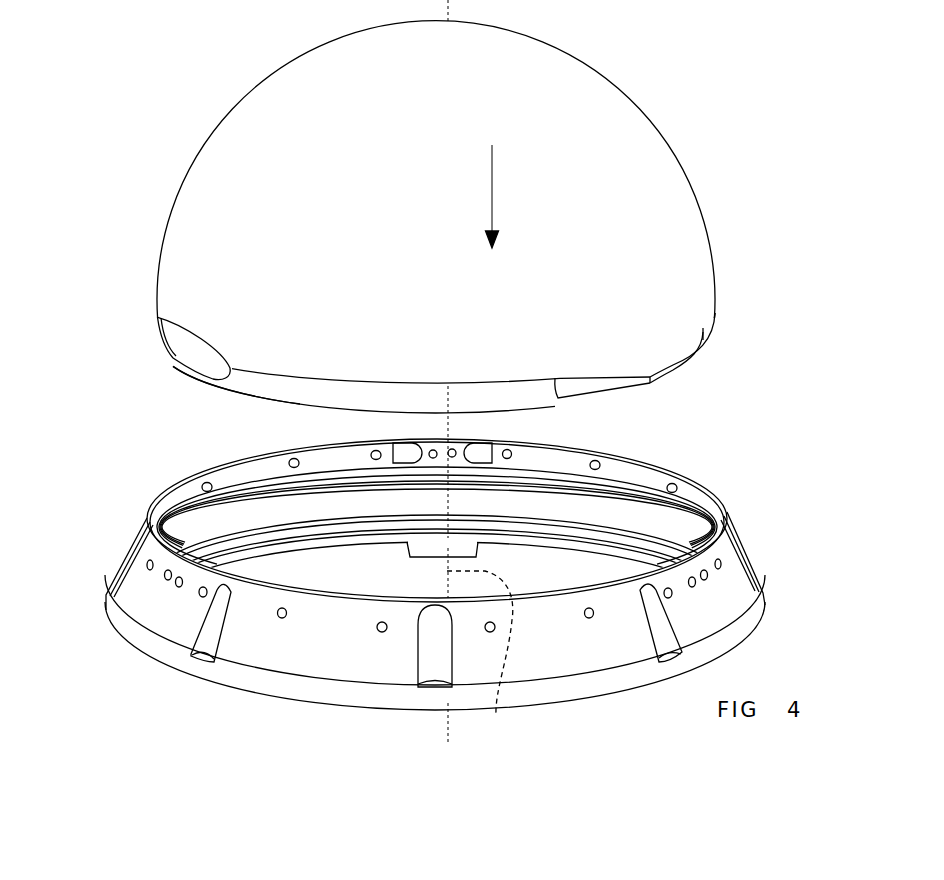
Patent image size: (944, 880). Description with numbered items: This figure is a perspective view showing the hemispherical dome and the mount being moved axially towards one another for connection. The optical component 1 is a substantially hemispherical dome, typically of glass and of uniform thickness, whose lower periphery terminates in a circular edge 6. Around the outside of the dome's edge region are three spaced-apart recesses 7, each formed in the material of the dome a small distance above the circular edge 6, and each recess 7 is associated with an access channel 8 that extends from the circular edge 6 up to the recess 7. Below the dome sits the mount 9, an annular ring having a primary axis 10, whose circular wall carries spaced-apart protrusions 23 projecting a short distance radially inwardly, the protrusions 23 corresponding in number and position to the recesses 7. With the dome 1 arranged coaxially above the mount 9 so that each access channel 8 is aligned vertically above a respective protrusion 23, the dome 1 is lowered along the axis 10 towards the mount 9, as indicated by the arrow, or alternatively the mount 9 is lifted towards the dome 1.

The optical component 1 is at (712, 130).
The circular edge 6 is at (242, 393).
The recess 7 is at (203, 357).
The access channel 8 is at (163, 349).
The mount 9 is at (757, 517).
The primary axis 10 is at (496, 715).
The protrusion 23 is at (458, 449).